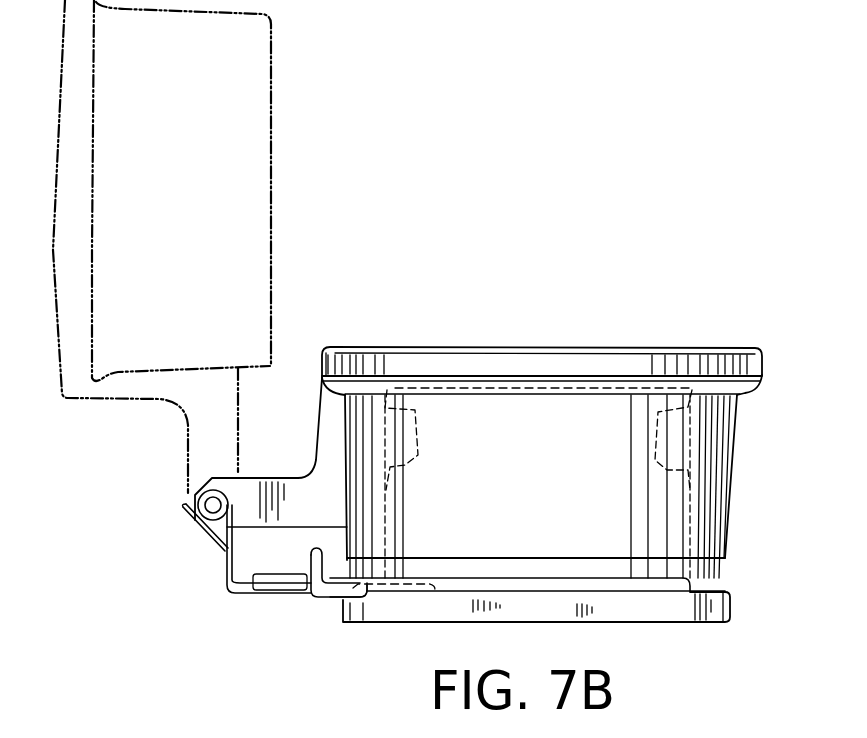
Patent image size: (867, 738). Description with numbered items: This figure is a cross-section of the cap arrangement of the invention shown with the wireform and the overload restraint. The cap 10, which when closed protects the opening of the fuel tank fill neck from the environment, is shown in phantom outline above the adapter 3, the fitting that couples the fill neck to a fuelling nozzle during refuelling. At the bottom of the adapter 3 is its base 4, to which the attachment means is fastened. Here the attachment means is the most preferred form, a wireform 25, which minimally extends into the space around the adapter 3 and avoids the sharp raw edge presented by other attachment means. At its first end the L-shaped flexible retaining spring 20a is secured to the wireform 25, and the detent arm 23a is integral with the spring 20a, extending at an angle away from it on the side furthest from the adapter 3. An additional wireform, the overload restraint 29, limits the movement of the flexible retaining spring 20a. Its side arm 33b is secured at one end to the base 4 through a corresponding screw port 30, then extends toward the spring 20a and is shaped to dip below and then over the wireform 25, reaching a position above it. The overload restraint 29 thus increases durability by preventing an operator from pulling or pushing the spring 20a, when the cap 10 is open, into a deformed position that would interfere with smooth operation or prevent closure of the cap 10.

The screw ports 30 is at (222, 246).
The cap 10 is at (735, 456).
The adapter 3 is at (690, 532).
The base 4 is at (685, 613).
The wireform 25 is at (467, 585).
The overload restraint 29 is at (320, 606).
The side arm 33b is at (339, 601).
The arm 23a is at (187, 513).
The flexible retaining spring 20a is at (226, 578).